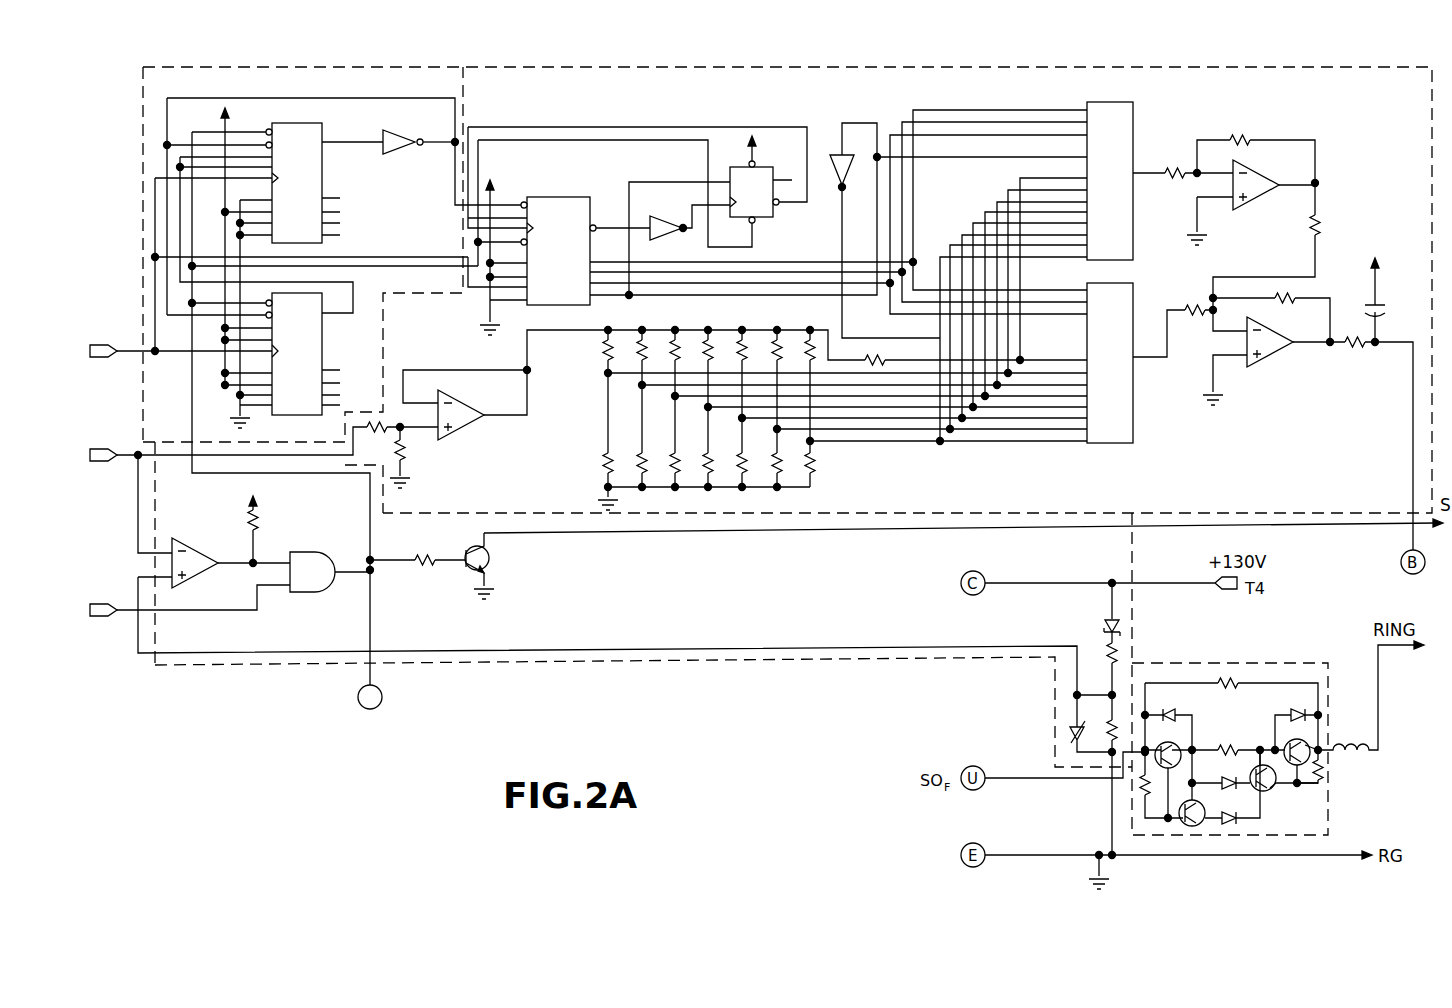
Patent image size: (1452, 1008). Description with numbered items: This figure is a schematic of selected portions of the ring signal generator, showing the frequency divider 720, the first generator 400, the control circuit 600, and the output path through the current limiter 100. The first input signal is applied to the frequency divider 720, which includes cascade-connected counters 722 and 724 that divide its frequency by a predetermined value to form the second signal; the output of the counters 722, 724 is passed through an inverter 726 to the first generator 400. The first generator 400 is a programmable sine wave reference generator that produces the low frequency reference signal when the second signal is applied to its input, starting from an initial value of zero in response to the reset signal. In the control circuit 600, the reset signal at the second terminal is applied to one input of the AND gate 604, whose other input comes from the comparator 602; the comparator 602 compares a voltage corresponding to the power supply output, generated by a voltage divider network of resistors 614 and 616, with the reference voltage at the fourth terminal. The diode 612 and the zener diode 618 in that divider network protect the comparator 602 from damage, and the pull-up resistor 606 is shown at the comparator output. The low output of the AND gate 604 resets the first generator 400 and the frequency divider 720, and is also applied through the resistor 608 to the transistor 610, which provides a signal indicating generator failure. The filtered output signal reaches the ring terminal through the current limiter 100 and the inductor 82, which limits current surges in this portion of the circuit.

The frequency divider 720 is at (602, 376).
The counter 722 is at (315, 211).
The counter 724 is at (315, 386).
The inverter 726 is at (392, 156).
The first generator 400 is at (1298, 469).
The control circuit 600 is at (573, 516).
The comparator 602 is at (197, 540).
The AND gate 604 is at (305, 593).
The pull-up resistor 606 is at (257, 530).
The resistor 608 is at (418, 570).
The transistor 610 is at (489, 567).
The diode 612 is at (1100, 627).
The resistor 614 is at (1120, 661).
The resistor 616 is at (1106, 734).
The zener diode 618 is at (1068, 736).
The current limiter 100 is at (1241, 725).
The inductor 82 is at (1362, 754).